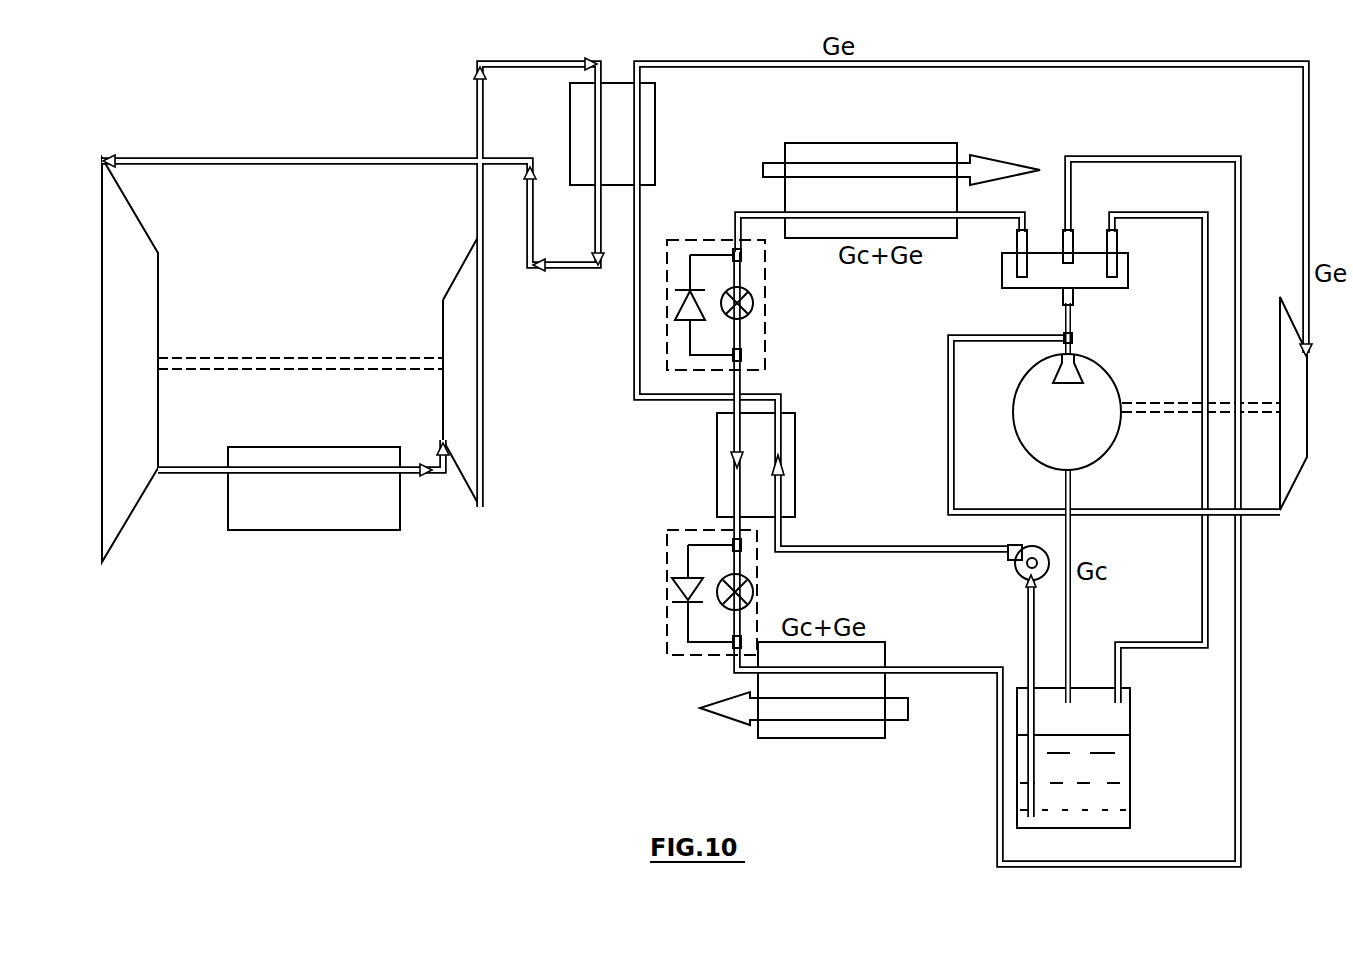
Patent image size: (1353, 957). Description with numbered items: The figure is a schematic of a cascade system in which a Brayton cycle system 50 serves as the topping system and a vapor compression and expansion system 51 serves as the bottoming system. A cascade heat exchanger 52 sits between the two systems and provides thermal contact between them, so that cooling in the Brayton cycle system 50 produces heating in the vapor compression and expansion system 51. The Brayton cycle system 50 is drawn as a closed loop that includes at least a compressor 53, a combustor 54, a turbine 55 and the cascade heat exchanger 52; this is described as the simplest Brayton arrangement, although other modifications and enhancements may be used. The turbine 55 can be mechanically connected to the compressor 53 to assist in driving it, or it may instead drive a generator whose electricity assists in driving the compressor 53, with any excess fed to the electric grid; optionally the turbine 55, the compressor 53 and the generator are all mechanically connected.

The Brayton cycle system 50 is at (262, 126).
The vapor compression and expansion system 51 is at (655, 593).
The cascade heat exchanger 52 is at (650, 118).
The compressor 53 is at (117, 240).
The combustor 54 is at (332, 523).
The turbine 55 is at (458, 383).